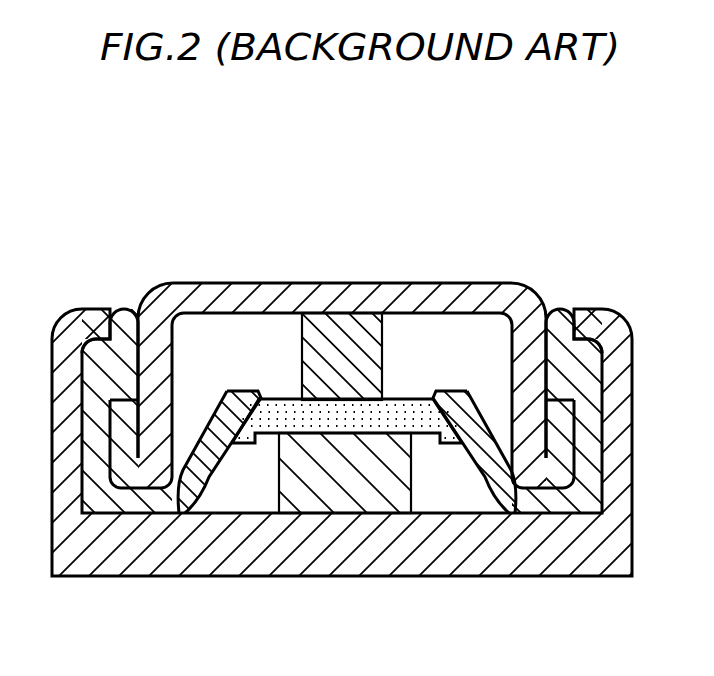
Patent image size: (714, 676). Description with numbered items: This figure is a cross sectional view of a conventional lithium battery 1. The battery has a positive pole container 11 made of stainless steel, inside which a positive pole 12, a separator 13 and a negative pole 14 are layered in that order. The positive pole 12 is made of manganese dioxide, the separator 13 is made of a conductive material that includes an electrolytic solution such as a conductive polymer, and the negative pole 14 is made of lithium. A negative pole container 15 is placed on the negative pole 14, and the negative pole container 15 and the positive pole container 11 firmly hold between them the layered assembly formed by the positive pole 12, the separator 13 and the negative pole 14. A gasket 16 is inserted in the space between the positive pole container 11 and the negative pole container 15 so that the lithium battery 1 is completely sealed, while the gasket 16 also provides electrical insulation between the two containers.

The lithium battery 1 is at (632, 181).
The positive pole container 11 is at (330, 570).
The positive pole 12 is at (411, 480).
The separator 13 is at (389, 405).
The negative pole 14 is at (386, 337).
The negative pole container 15 is at (300, 295).
The gasket 16 is at (121, 305).